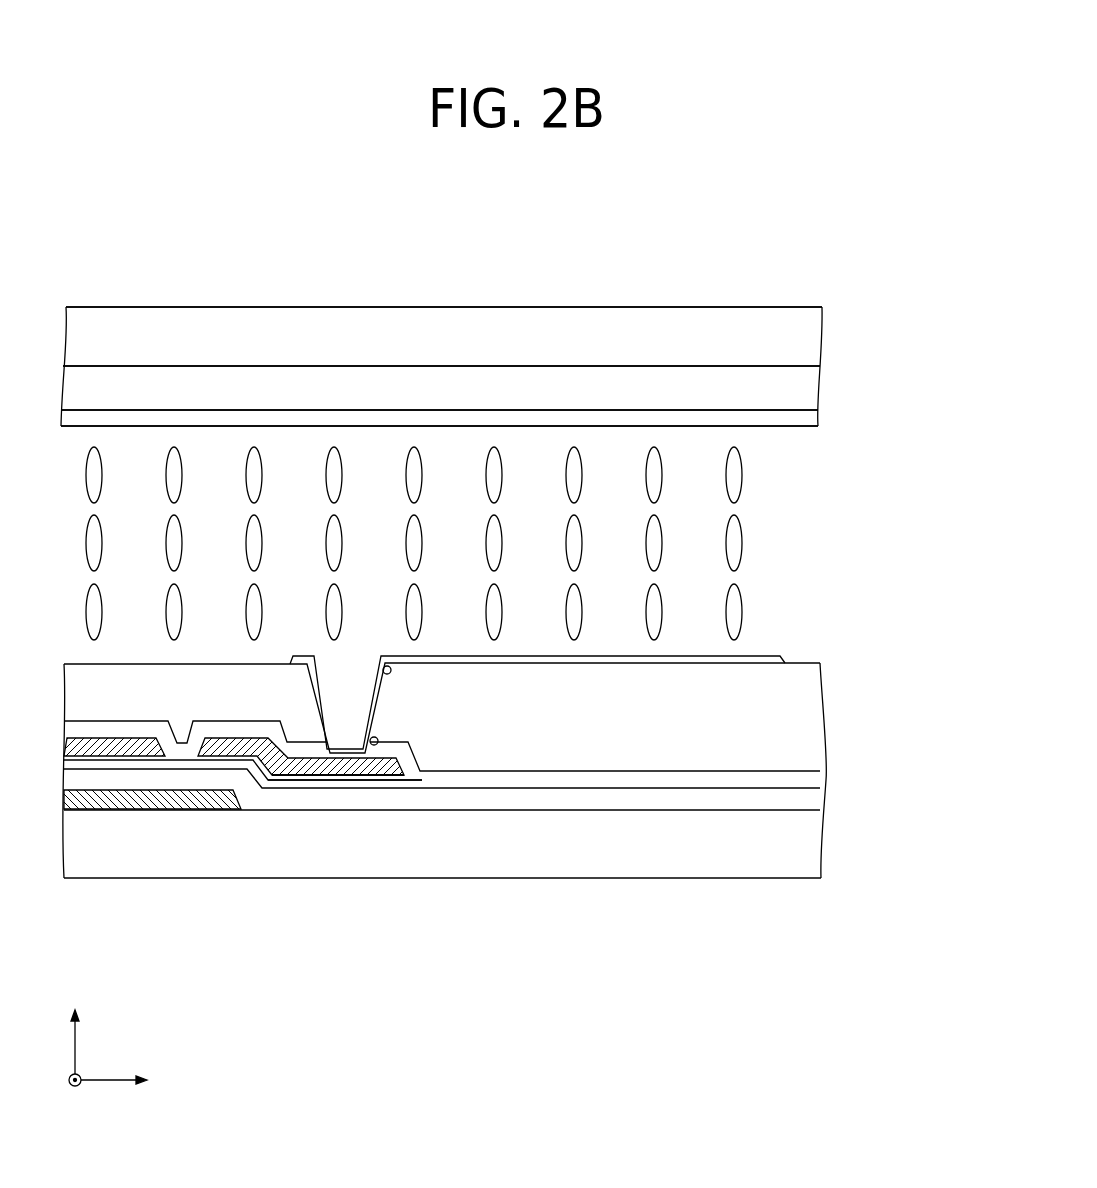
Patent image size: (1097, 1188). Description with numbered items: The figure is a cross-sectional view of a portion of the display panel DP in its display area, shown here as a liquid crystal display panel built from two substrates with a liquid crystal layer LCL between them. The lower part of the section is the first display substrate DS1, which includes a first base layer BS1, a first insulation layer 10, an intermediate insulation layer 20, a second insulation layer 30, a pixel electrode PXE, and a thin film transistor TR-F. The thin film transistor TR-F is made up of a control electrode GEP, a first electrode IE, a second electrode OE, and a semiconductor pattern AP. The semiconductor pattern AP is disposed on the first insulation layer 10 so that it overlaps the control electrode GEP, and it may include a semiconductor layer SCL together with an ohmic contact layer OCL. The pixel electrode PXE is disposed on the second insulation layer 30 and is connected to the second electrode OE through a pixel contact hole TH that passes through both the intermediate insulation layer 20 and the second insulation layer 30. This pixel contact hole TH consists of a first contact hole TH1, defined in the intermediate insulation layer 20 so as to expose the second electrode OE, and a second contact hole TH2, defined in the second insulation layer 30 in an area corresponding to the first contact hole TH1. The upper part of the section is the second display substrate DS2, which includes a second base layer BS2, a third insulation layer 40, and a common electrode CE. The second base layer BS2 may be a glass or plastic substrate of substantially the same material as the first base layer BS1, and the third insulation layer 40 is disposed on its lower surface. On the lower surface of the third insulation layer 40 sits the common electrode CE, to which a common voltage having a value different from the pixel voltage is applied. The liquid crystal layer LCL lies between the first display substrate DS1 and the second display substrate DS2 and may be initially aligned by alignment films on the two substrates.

The display panel DP is at (797, 277).
The second display substrate DS2 is at (915, 325).
The second base layer BS2 is at (817, 337).
The third insulation layer 40 is at (810, 389).
The common electrode CE is at (807, 417).
The liquid crystal layer LCL is at (781, 562).
The first display substrate DS1 is at (917, 710).
The first base layer BS1 is at (808, 837).
The first insulation layer 10 is at (812, 800).
The intermediate insulation layer 20 is at (813, 780).
The second insulation layer 30 is at (807, 725).
The pixel electrode PXE is at (637, 660).
The control electrode GEP is at (217, 803).
The first electrode IE is at (148, 744).
The second electrode OE is at (377, 768).
The semiconductor pattern AP is at (365, 930).
The semiconductor layer SCL is at (285, 778).
The ohmic contact layer OCL is at (338, 778).
The pixel contact hole TH is at (500, 930).
The first contact hole TH1 is at (377, 744).
The second contact hole TH2 is at (390, 672).
The thin film transistor TR-F is at (388, 972).